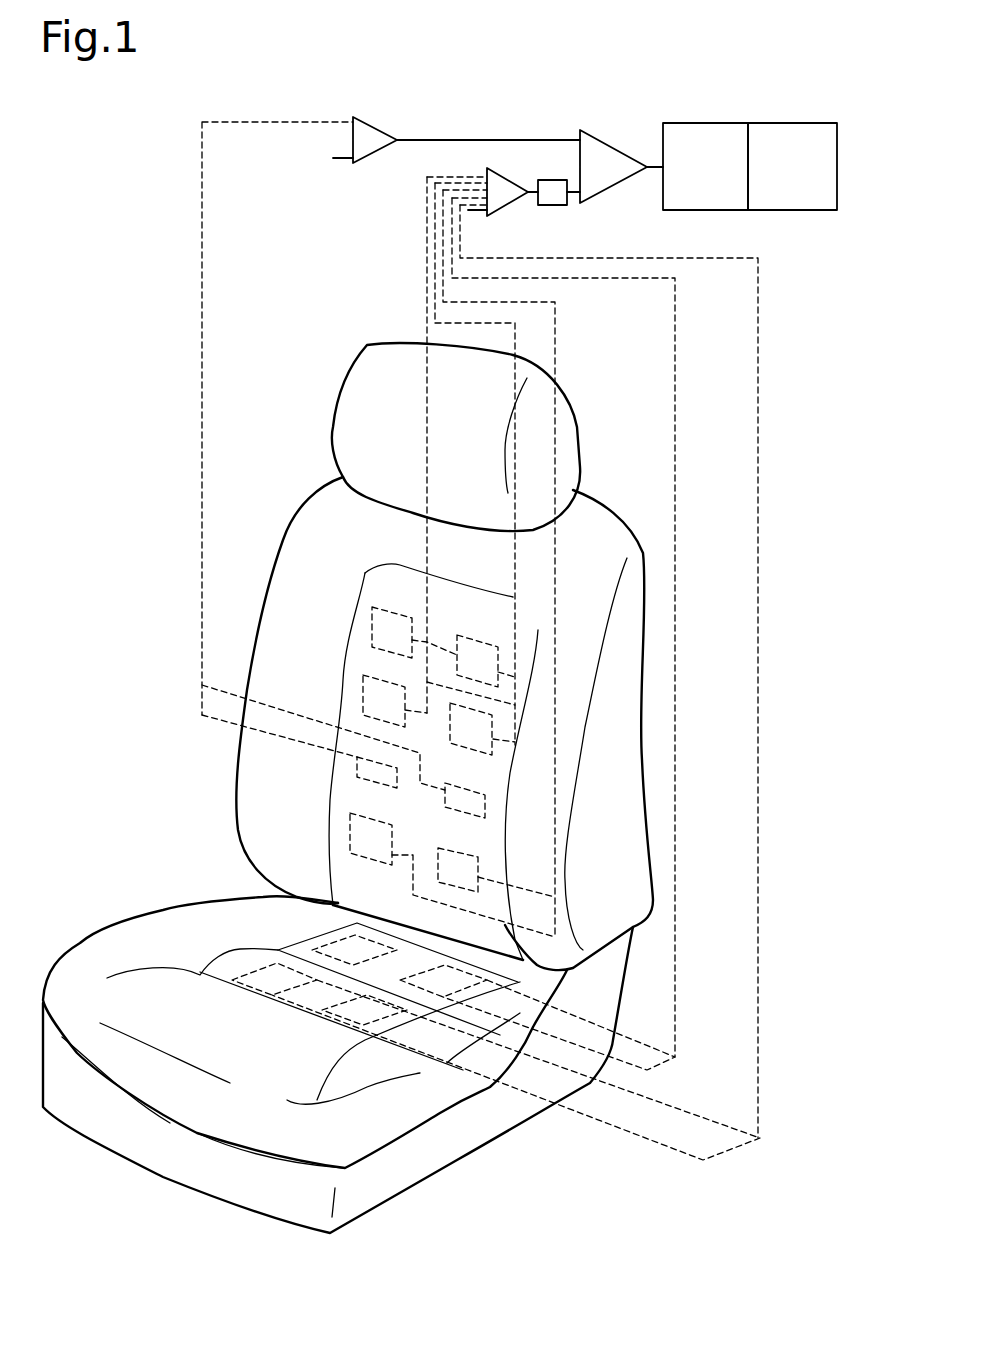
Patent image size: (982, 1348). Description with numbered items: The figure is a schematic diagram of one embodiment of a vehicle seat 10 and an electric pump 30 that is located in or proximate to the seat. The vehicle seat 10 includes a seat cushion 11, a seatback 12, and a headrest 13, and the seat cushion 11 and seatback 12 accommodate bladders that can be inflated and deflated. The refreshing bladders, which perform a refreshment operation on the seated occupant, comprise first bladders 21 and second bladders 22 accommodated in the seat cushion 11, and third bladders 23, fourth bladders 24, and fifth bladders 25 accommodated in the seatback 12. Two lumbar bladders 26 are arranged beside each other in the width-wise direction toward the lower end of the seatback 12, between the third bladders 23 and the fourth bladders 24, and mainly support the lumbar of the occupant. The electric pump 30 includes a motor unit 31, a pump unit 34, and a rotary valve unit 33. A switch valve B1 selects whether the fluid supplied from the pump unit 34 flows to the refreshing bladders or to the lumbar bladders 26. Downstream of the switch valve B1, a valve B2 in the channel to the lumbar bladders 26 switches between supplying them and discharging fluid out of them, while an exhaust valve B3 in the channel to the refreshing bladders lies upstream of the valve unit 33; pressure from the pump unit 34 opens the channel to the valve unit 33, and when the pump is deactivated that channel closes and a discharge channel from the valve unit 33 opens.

The vehicle seat 10 is at (165, 720).
The seat cushion 11 is at (182, 930).
The seatback 12 is at (293, 570).
The headrest 13 is at (365, 400).
The first bladders 21 is at (250, 988).
The second bladders 22 is at (348, 937).
The third bladders 23 is at (350, 830).
The fourth bladders 24 is at (363, 695).
The fifth bladders 25 is at (457, 637).
The lumbar bladders 26 is at (380, 783).
The electric pump 30 is at (800, 238).
The motor unit 31 is at (792, 123).
The rotary valve unit 33 is at (515, 203).
The pump unit 34 is at (703, 123).
The switch valve B1 is at (617, 147).
The valve B2 is at (370, 127).
The exhaust valve B3 is at (550, 207).